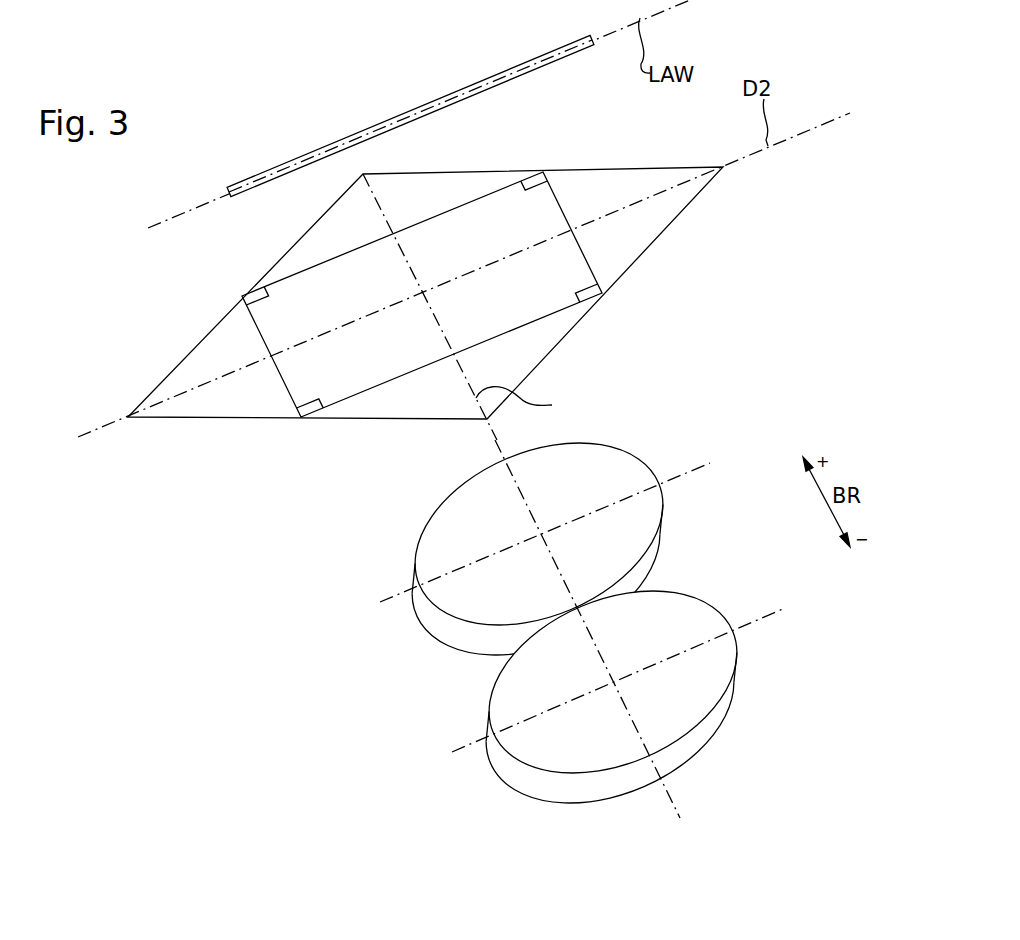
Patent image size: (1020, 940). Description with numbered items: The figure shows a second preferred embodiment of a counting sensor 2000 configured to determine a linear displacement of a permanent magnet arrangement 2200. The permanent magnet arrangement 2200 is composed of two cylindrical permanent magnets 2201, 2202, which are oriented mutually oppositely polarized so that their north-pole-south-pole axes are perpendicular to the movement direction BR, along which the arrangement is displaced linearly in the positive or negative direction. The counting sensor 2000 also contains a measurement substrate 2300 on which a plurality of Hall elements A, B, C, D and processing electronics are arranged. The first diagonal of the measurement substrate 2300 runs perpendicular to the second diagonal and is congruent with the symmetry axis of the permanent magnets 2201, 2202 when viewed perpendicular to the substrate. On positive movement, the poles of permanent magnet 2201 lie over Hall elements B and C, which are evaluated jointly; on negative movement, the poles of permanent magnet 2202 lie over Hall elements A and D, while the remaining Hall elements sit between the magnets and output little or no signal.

The counting sensor 2000 is at (585, 27).
The measurement substrate 2300 is at (652, 258).
The permanent magnet arrangement 2200 is at (549, 613).
The permanent magnet 2201 is at (738, 670).
The permanent magnet 2202 is at (665, 528).